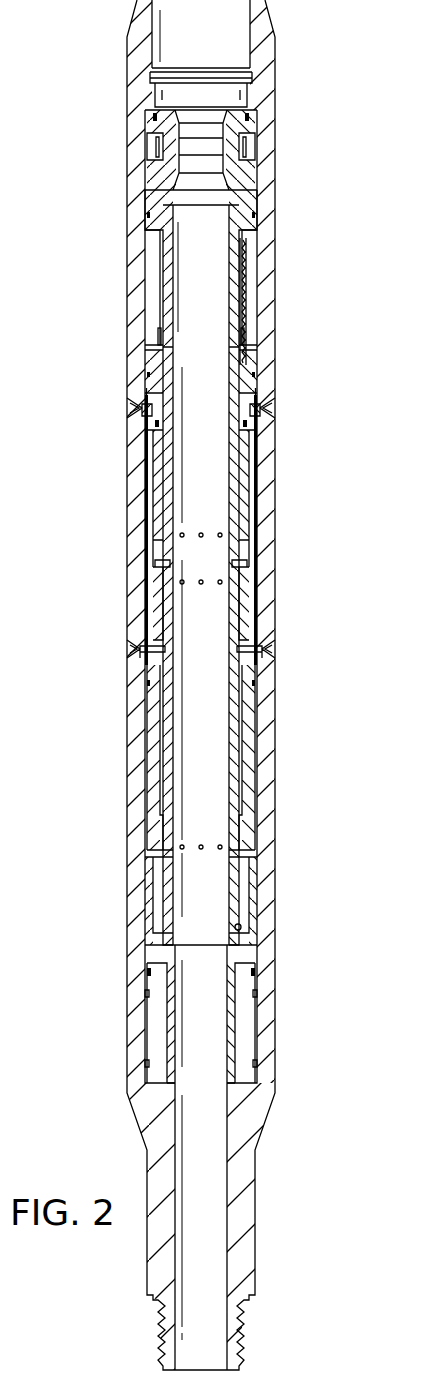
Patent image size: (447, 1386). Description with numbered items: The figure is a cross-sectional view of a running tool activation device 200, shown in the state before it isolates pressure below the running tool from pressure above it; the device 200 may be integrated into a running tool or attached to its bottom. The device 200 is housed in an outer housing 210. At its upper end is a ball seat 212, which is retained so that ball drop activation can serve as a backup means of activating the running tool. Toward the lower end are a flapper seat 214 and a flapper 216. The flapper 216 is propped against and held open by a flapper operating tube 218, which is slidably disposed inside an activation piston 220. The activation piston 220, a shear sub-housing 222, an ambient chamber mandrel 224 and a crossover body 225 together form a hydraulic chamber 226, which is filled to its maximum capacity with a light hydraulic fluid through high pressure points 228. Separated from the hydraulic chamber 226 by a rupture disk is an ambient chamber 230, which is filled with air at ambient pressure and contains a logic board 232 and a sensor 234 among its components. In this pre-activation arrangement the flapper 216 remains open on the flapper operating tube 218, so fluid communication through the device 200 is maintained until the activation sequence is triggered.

The running tool activation device 200 is at (85, 97).
The outer housing 210 is at (268, 486).
The ball seat 212 is at (218, 160).
The flapper seat 214 is at (256, 975).
The flapper 216 is at (255, 907).
The flapper operating tube 218 is at (213, 748).
The activation piston 220 is at (153, 802).
The shear sub-housing 222 is at (154, 450).
The ambient chamber mandrel 224 is at (250, 383).
The crossover body 225 is at (152, 727).
The hydraulic chamber 226 is at (152, 554).
The high pressure points 228 is at (132, 653).
The ambient chamber 230 is at (156, 280).
The logic board 232 is at (268, 254).
The sensor 234 is at (156, 343).